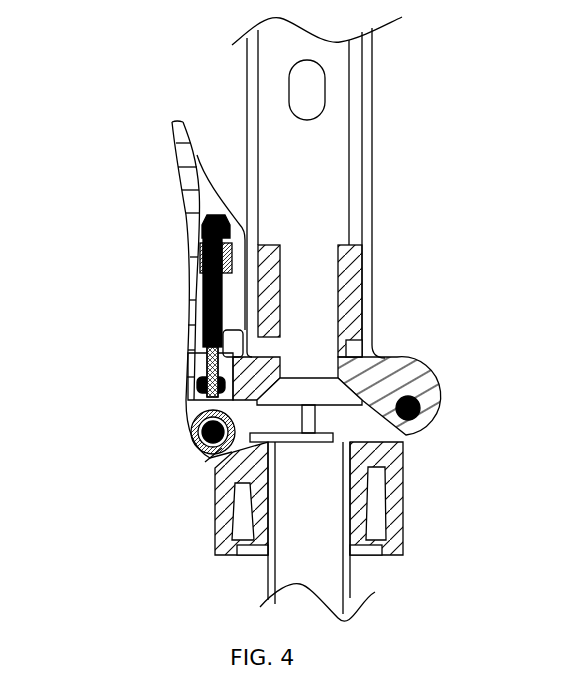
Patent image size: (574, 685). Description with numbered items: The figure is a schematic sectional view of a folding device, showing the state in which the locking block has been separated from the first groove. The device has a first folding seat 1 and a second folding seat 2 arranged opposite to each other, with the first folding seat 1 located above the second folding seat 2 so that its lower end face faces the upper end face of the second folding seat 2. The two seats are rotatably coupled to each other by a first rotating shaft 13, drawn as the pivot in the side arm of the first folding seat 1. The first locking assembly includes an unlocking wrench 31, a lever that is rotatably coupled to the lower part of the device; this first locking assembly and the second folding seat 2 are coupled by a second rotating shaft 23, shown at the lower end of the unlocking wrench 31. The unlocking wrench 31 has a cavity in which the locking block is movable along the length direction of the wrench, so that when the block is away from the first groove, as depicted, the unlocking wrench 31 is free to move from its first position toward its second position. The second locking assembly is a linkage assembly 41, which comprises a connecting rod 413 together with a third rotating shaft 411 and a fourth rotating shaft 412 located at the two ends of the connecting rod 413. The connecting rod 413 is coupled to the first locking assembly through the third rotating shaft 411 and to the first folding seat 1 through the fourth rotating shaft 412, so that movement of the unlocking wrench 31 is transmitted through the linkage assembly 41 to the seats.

The first folding seat 1 is at (357, 365).
The second folding seat 2 is at (378, 460).
The first rotating shaft 13 is at (417, 397).
The second rotating shaft 23 is at (203, 437).
The unlocking wrench 31 is at (190, 183).
The linkage assembly 41 is at (134, 306).
The third rotating shaft 411 is at (205, 230).
The fourth rotating shaft 412 is at (167, 372).
The connecting rod 413 is at (203, 293).